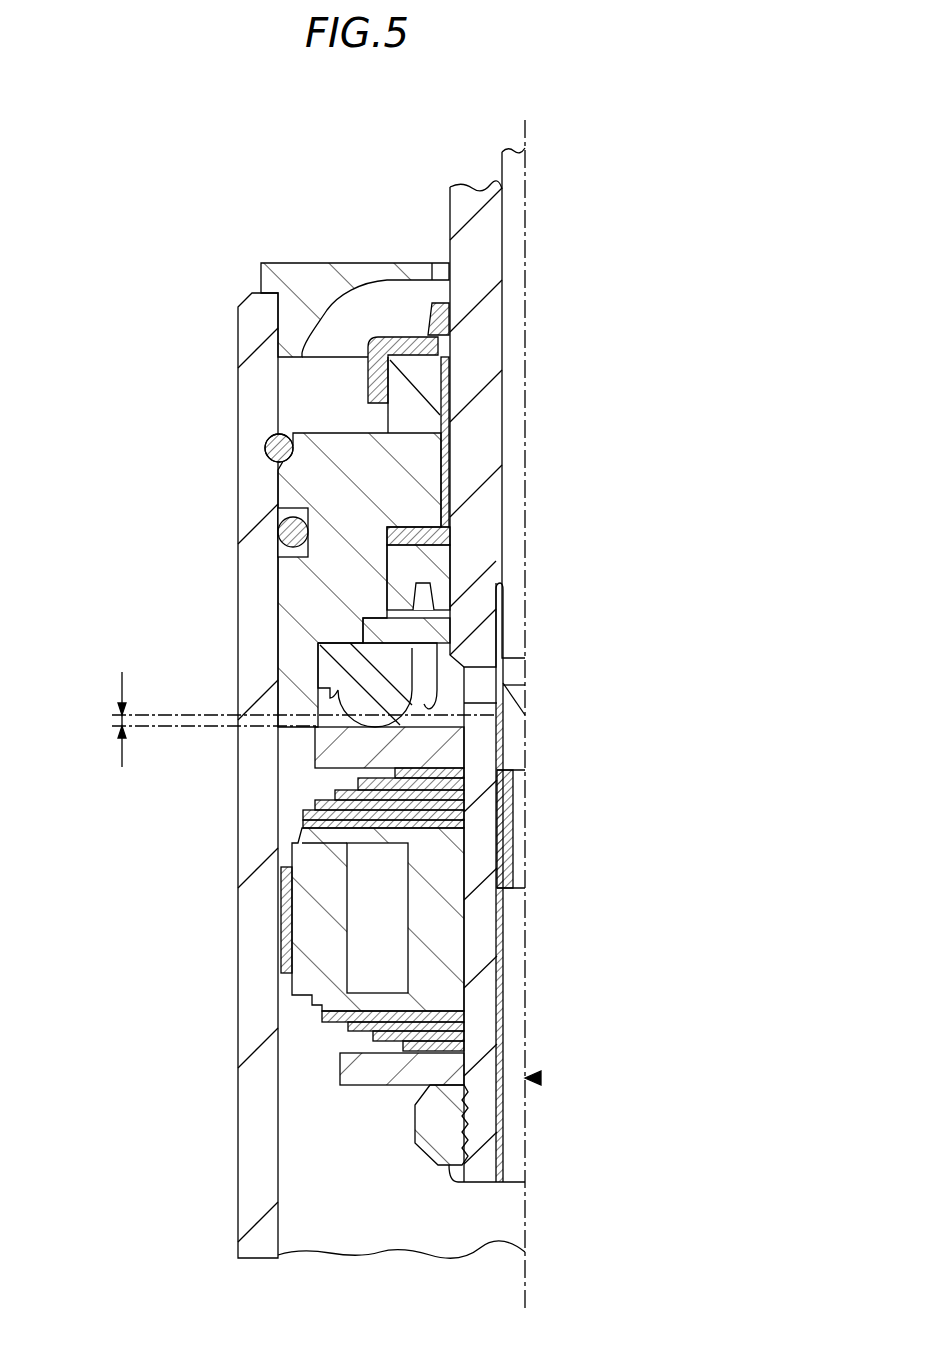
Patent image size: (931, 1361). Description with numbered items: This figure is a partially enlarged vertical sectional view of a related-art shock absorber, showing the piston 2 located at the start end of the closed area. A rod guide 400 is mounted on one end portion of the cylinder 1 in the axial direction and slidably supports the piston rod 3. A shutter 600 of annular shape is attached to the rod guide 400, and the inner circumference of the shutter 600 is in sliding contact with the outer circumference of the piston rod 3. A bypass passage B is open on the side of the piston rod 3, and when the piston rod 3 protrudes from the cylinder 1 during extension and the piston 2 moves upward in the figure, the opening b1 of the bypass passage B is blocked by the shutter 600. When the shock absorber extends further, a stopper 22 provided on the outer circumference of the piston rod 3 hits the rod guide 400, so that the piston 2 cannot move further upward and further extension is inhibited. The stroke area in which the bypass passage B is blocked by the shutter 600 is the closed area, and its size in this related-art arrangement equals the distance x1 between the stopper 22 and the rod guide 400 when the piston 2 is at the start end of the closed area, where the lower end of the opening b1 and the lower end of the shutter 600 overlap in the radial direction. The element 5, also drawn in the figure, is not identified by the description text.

The cylinder 1 is at (245, 1213).
The piston 2 is at (290, 995).
The piston rod 3 is at (449, 212).
The shaft 5 is at (500, 163).
The stopper 22 is at (315, 752).
The rod guide 400 is at (278, 487).
The shutter 600 is at (433, 672).
The opening b1 is at (500, 710).
The bypass passage B is at (540, 1078).
The distance x1 is at (282, 719).